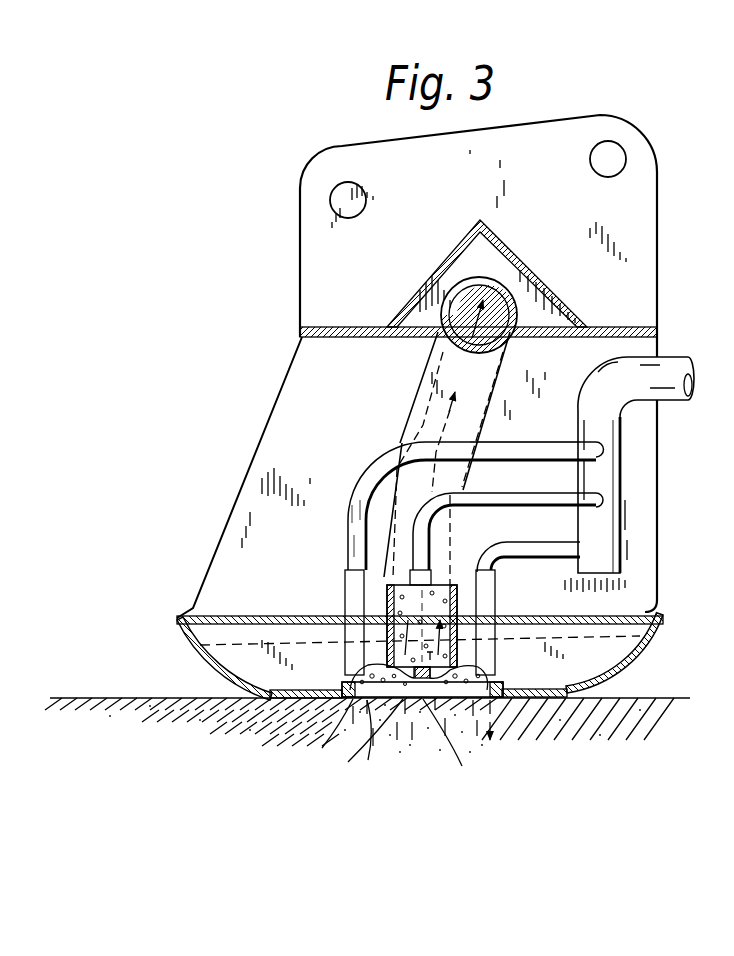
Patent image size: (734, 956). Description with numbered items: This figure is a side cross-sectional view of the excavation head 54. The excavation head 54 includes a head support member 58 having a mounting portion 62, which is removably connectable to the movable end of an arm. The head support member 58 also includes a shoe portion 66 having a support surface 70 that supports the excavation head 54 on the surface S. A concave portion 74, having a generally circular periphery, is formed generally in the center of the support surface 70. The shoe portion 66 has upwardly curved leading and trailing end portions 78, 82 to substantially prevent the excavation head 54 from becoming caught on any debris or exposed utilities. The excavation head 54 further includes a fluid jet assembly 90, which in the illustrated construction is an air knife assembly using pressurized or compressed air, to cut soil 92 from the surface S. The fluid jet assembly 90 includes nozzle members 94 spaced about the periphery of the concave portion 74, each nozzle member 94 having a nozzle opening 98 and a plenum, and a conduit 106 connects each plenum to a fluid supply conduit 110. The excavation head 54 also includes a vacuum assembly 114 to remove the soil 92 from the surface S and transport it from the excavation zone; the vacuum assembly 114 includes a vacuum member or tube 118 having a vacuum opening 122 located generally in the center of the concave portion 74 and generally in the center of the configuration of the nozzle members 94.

The mounting portion 62 is at (300, 160).
The excavation head 54 is at (414, 522).
The head support member 58 is at (262, 443).
The vacuum assembly 114 is at (392, 440).
The conduit 106 is at (552, 547).
The fluid supply conduit 110 is at (613, 493).
The soil 92 is at (462, 586).
The fluid jet assembly 90 is at (342, 596).
The nozzle member 94 is at (343, 620).
The vacuum member or tube 118 is at (427, 607).
The shoe portion 66 is at (660, 638).
The leading end portion 78 is at (633, 661).
The trailing end portion 82 is at (188, 636).
The support surface 70 is at (272, 699).
The concave portion 74 is at (363, 677).
The nozzle opening 98 is at (347, 720).
The vacuum opening 122 is at (352, 750).
The surface S is at (78, 697).